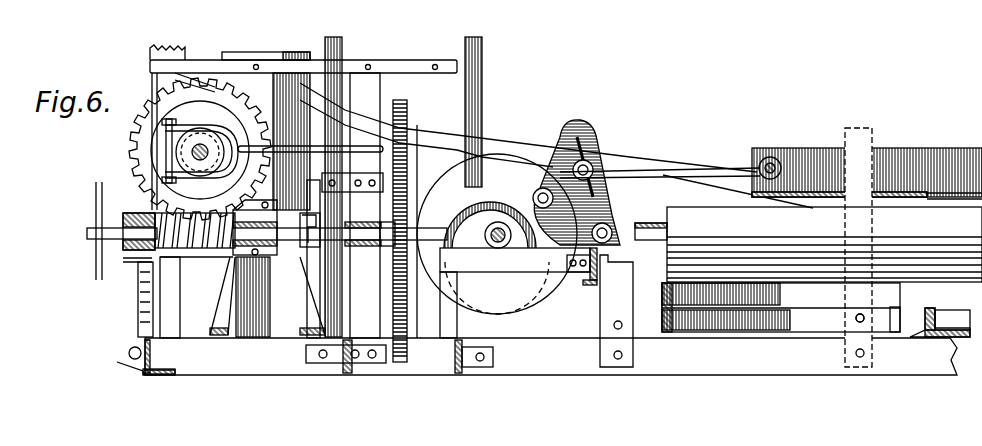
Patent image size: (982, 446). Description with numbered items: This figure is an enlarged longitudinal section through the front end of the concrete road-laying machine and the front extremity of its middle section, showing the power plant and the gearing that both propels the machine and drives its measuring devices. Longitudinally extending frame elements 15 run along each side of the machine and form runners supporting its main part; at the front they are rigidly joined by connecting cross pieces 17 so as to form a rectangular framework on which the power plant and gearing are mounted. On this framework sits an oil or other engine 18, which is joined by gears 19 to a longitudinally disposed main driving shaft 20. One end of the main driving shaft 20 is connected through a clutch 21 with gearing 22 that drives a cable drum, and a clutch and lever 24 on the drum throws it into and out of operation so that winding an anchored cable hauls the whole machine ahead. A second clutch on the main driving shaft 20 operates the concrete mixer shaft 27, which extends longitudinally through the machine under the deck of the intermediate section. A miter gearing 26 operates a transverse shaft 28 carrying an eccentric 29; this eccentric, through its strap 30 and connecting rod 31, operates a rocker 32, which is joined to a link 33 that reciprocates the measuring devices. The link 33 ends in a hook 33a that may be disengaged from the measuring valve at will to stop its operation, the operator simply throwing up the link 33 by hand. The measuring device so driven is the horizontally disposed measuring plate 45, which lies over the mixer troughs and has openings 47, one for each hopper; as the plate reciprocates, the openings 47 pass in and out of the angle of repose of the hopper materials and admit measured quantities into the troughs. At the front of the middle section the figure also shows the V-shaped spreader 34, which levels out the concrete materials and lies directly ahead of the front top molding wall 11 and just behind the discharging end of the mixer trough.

The top molding wall 11 is at (967, 303).
The longitudinally extending frame elements 15 is at (563, 332).
The connecting cross pieces 17 is at (152, 344).
The engine 18 is at (300, 24).
The gears 19 is at (410, 157).
The main driving shaft 20 is at (356, 250).
The clutch 21 is at (292, 246).
The gearing 22 is at (130, 148).
The clutch and lever 24 is at (362, 140).
The miter gearing 26 is at (536, 307).
The concrete mixer shaft 27 is at (808, 244).
The transverse shaft 28 is at (500, 226).
The eccentric 29 is at (496, 258).
The strap 30 is at (472, 205).
The connecting rod 31 is at (533, 212).
The rocker 32 is at (607, 200).
The link 33 is at (697, 172).
The hook 33a is at (772, 162).
The V-shaped spreader 34 is at (792, 318).
The measuring plate 45 is at (883, 195).
The openings 47 is at (942, 193).